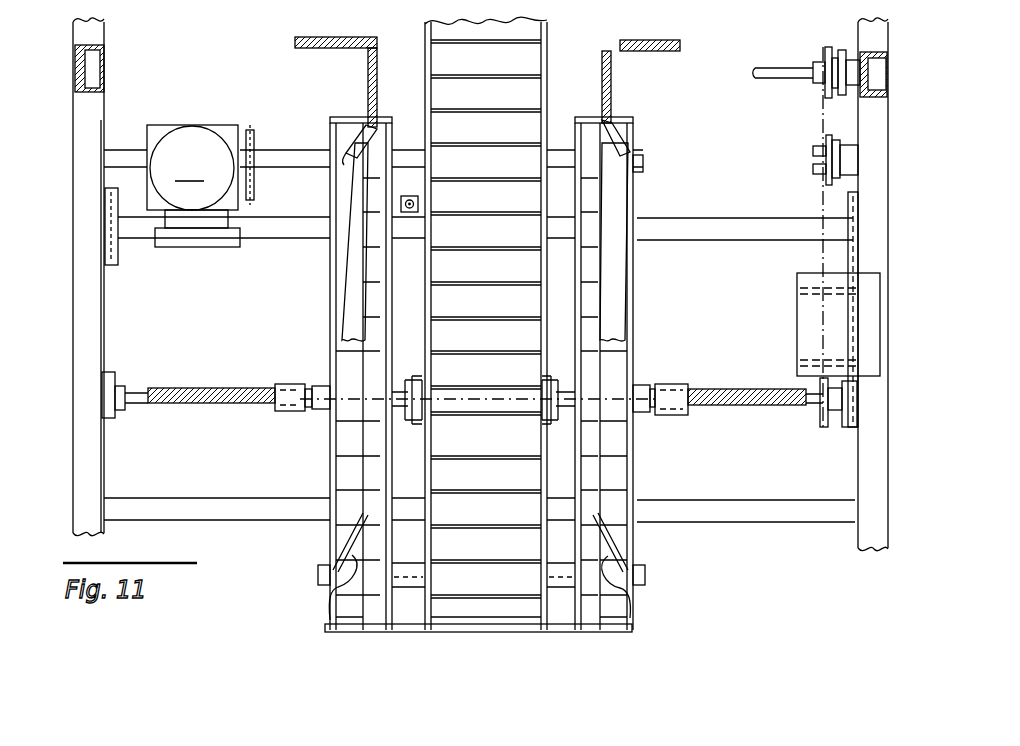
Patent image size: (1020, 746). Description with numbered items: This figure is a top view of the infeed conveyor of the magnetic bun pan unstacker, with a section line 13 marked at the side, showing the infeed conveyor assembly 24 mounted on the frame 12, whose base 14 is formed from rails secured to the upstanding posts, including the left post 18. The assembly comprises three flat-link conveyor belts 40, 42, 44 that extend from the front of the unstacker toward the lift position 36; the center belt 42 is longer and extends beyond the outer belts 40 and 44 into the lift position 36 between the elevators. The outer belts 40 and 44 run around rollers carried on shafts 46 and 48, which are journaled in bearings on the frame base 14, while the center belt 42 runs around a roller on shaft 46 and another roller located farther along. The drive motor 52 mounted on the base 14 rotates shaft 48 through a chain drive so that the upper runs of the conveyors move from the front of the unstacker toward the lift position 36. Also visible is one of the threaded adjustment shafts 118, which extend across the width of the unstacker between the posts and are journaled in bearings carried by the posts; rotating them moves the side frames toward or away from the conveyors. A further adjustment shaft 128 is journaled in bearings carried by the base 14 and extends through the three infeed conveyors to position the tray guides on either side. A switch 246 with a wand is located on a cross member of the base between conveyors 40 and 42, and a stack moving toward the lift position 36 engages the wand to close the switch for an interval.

The frame 12 is at (110, 688).
The section line 13- 13 is at (878, 5).
The base 14 is at (105, 120).
The left post 18 is at (76, 68).
The infeed conveyor assembly 24 is at (312, 537).
The lift position 36 is at (552, 27).
The conveyor belt 40 is at (360, 607).
The center conveyor belt 42 is at (473, 608).
The conveyor belt 44 is at (600, 611).
The shaft 46 is at (553, 573).
The shaft 48 is at (555, 152).
The drive motor 52 is at (200, 186).
The adjustment shaft 118 is at (782, 68).
The adjustment shaft 128 is at (734, 395).
The switch 246 is at (410, 194).